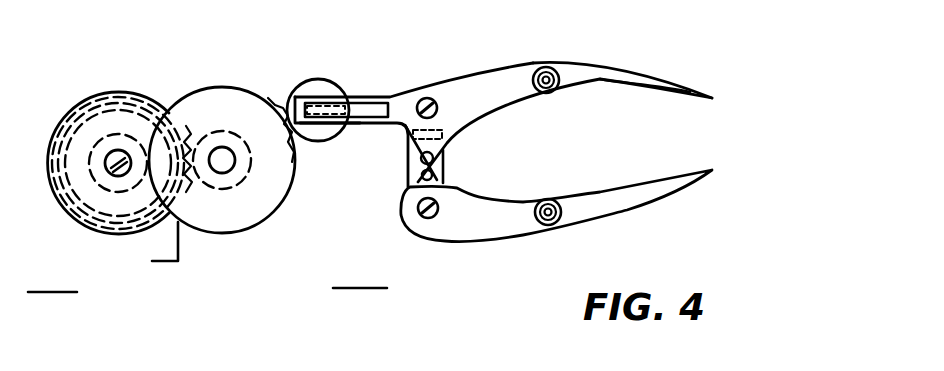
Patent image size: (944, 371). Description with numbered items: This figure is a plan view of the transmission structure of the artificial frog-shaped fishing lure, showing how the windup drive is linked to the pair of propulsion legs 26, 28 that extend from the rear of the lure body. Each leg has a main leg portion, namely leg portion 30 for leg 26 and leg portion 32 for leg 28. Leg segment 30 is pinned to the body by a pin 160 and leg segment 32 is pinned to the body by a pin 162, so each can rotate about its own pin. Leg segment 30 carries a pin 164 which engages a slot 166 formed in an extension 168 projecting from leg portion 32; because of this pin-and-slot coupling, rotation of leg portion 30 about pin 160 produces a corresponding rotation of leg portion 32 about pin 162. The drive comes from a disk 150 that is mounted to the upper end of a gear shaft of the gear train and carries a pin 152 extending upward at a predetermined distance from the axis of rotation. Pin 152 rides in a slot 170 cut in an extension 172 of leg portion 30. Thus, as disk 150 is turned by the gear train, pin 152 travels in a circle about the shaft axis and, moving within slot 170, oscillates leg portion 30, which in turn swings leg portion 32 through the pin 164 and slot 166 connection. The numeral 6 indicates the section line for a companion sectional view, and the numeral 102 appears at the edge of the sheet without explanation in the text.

The section line of FIG. 6 is at (367, 256).
The leg 26 is at (543, 54).
The leg 28 is at (556, 229).
The main leg portion 30 is at (478, 80).
The main leg portion 32 is at (517, 227).
The ribbon supply spool 102 is at (144, 231).
The disk 150 is at (313, 86).
The pin 152 is at (335, 106).
The pin 160 is at (423, 98).
The pin 162 is at (433, 217).
The pin 164 is at (448, 137).
The slot 166 is at (446, 172).
The extension 168 is at (446, 163).
The slot 170 is at (371, 113).
The extension 172 is at (334, 122).